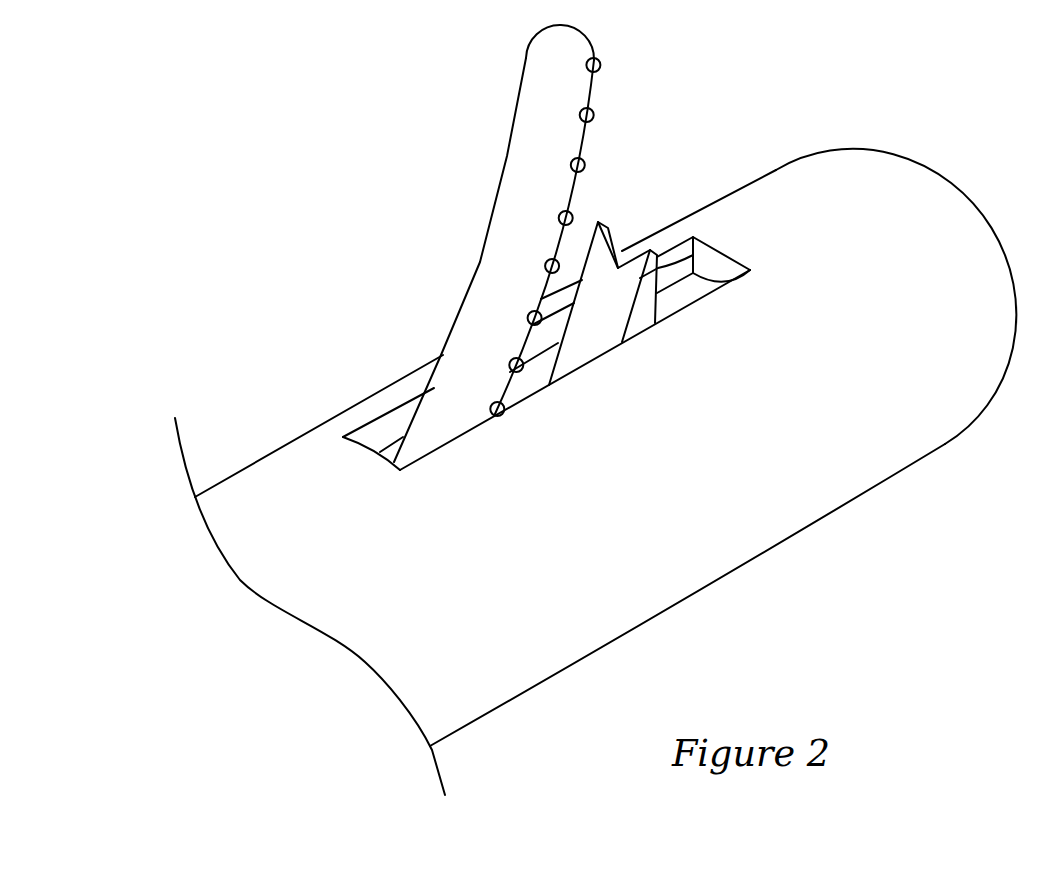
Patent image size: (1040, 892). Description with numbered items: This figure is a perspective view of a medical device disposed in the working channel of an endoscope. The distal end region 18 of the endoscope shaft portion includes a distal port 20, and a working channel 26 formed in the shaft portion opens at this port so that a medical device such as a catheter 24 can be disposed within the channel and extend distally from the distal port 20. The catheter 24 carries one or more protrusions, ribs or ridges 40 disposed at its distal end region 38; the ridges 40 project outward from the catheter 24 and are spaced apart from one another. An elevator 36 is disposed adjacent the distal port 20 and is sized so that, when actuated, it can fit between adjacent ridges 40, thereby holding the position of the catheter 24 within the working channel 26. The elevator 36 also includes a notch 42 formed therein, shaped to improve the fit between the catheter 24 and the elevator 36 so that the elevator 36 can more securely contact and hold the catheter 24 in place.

The distal end region 18 is at (877, 277).
The distal port 20 is at (528, 304).
The catheter 24 is at (537, 243).
The working channel 26 is at (393, 423).
The elevator 36 is at (694, 240).
The distal end region 38 is at (505, 262).
The ridges 40 is at (585, 166).
The notch 42 is at (621, 250).